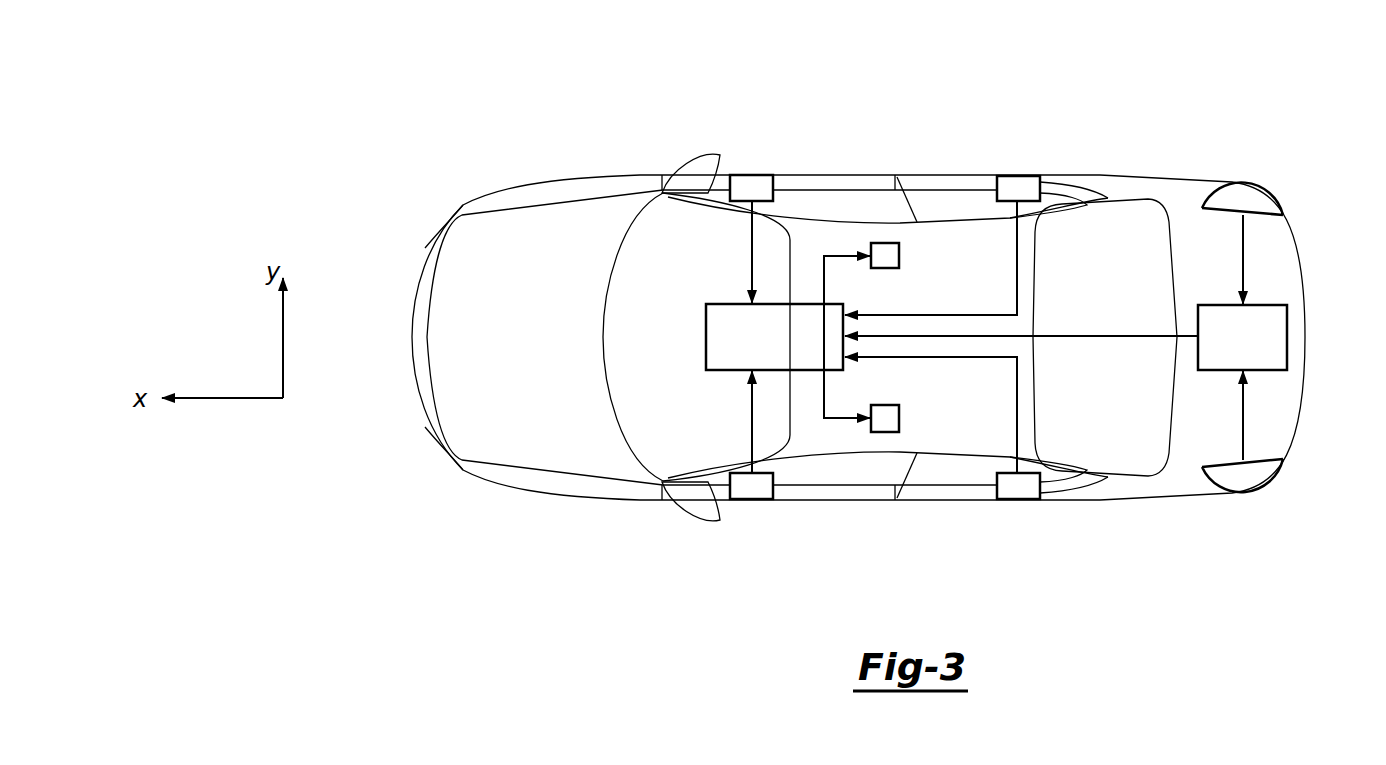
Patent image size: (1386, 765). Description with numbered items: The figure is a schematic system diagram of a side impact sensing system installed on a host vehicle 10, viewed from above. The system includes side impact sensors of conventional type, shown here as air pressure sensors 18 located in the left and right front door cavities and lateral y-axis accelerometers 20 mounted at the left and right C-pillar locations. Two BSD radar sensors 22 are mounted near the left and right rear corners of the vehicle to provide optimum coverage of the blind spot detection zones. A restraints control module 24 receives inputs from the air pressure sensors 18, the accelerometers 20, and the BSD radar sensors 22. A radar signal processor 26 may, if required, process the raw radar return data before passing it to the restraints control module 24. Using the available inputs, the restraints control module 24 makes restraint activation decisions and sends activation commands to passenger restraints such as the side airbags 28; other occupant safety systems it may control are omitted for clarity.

The host vehicle 10 is at (447, 113).
The air pressure sensors 18 is at (752, 190).
The lateral accelerometers 20 is at (1018, 190).
The BSD radar sensors 22 is at (1245, 195).
The restraints control module 24 is at (706, 338).
The radar signal processor 26 is at (1287, 338).
The side airbags 28 is at (899, 257).